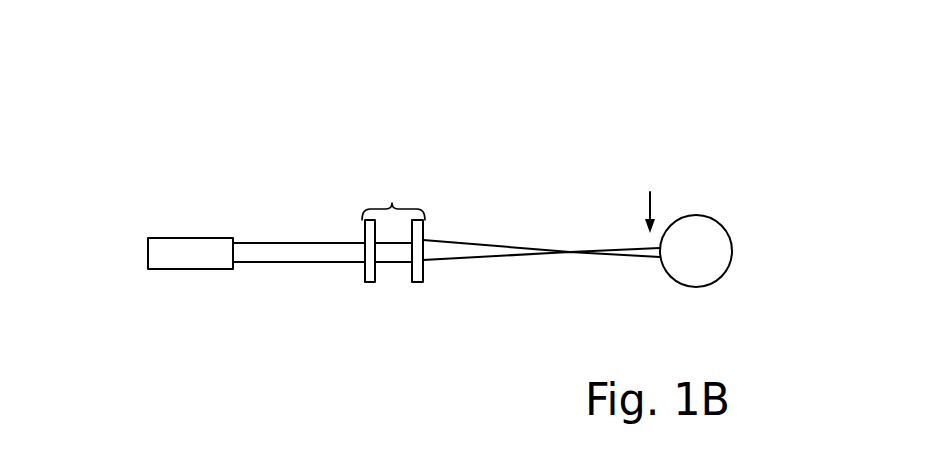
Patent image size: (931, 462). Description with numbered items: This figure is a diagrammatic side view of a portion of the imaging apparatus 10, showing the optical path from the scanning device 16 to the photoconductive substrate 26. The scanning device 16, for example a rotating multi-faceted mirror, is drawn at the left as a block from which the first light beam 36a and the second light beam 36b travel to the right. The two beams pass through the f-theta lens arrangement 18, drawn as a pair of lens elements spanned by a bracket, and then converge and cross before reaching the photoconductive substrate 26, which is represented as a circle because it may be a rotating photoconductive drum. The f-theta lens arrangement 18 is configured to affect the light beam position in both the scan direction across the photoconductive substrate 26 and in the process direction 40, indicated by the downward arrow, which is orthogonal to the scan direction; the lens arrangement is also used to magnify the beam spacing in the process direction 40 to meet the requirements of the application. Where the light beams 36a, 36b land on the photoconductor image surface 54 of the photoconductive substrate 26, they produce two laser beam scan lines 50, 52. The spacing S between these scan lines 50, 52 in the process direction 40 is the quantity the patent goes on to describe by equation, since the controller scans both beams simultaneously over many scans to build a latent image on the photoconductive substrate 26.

The imaging apparatus 10 is at (146, 86).
The scanning device 16 is at (188, 238).
The f-theta lens arrangement 18 is at (391, 202).
The photoconductive substrate 26 is at (727, 217).
The first light beam 36a is at (628, 247).
The second light beam 36b is at (625, 257).
The process direction 40 is at (648, 207).
The laser beam scan line 50 is at (676, 252).
The laser beam scan line 52 is at (673, 253).
The photoconductor image surface 54 is at (730, 265).
The spacing S is at (675, 252).